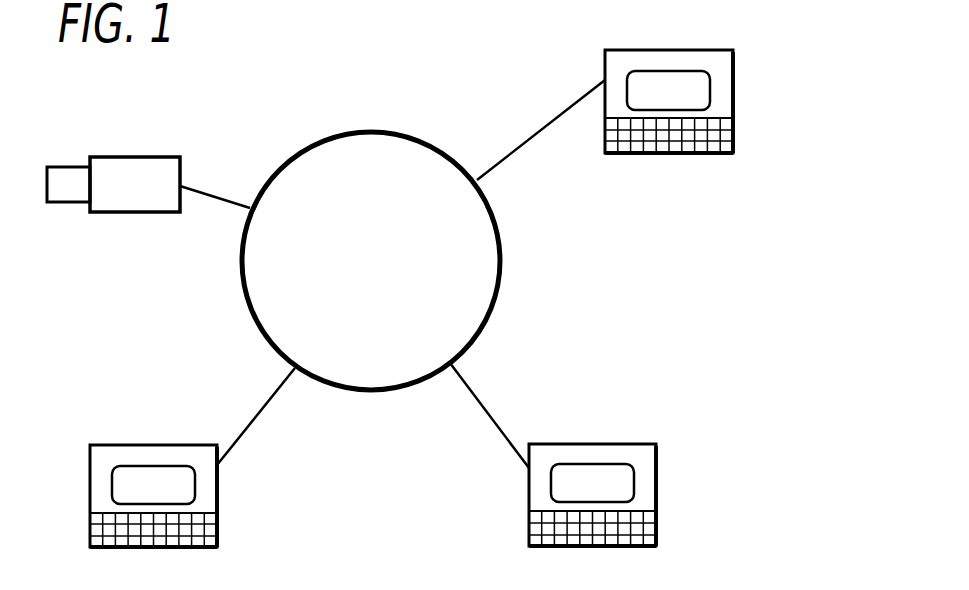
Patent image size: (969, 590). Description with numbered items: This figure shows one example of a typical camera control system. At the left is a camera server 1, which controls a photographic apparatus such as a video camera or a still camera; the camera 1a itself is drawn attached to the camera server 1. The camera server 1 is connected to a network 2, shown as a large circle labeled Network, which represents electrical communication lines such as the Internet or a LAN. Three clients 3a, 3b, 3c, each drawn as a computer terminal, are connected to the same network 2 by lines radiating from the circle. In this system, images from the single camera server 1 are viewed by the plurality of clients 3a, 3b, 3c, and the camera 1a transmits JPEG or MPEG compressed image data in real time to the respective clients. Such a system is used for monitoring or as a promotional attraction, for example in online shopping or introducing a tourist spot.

The camera server 1 is at (113, 174).
The camera 1a is at (65, 205).
The network 2 is at (370, 130).
The client 3a is at (613, 50).
The client 3b is at (538, 444).
The client 3c is at (100, 445).